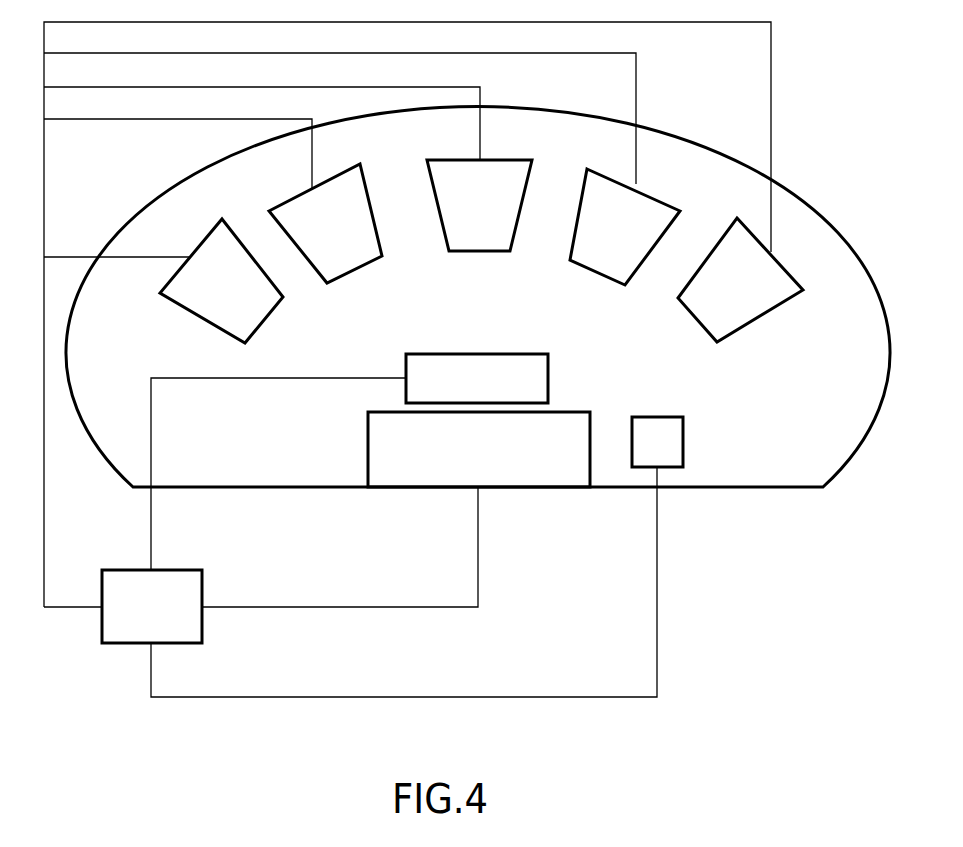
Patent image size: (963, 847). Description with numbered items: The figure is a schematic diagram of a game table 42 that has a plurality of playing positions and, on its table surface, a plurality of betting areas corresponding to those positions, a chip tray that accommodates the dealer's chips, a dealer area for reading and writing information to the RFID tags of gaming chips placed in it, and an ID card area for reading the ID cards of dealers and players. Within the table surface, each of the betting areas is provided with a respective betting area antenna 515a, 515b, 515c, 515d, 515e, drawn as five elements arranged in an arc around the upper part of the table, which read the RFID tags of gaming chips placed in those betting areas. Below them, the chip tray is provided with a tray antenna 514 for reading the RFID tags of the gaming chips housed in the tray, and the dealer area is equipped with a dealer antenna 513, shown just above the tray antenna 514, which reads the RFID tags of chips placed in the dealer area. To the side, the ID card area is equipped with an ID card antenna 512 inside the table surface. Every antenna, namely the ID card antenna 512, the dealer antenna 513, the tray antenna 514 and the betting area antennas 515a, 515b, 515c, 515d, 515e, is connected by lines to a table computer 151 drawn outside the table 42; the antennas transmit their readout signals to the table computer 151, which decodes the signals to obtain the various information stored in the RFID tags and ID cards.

The game table 42 is at (868, 268).
The betting area antenna 515a is at (265, 323).
The betting area antenna 515b is at (357, 272).
The betting area antenna 515c is at (485, 253).
The betting area antenna 515d is at (602, 282).
The betting area antenna 515e is at (748, 327).
The dealer antenna 513 is at (549, 380).
The tray antenna 514 is at (367, 457).
The ID card antenna 512 is at (683, 438).
The table computer 151 is at (123, 645).